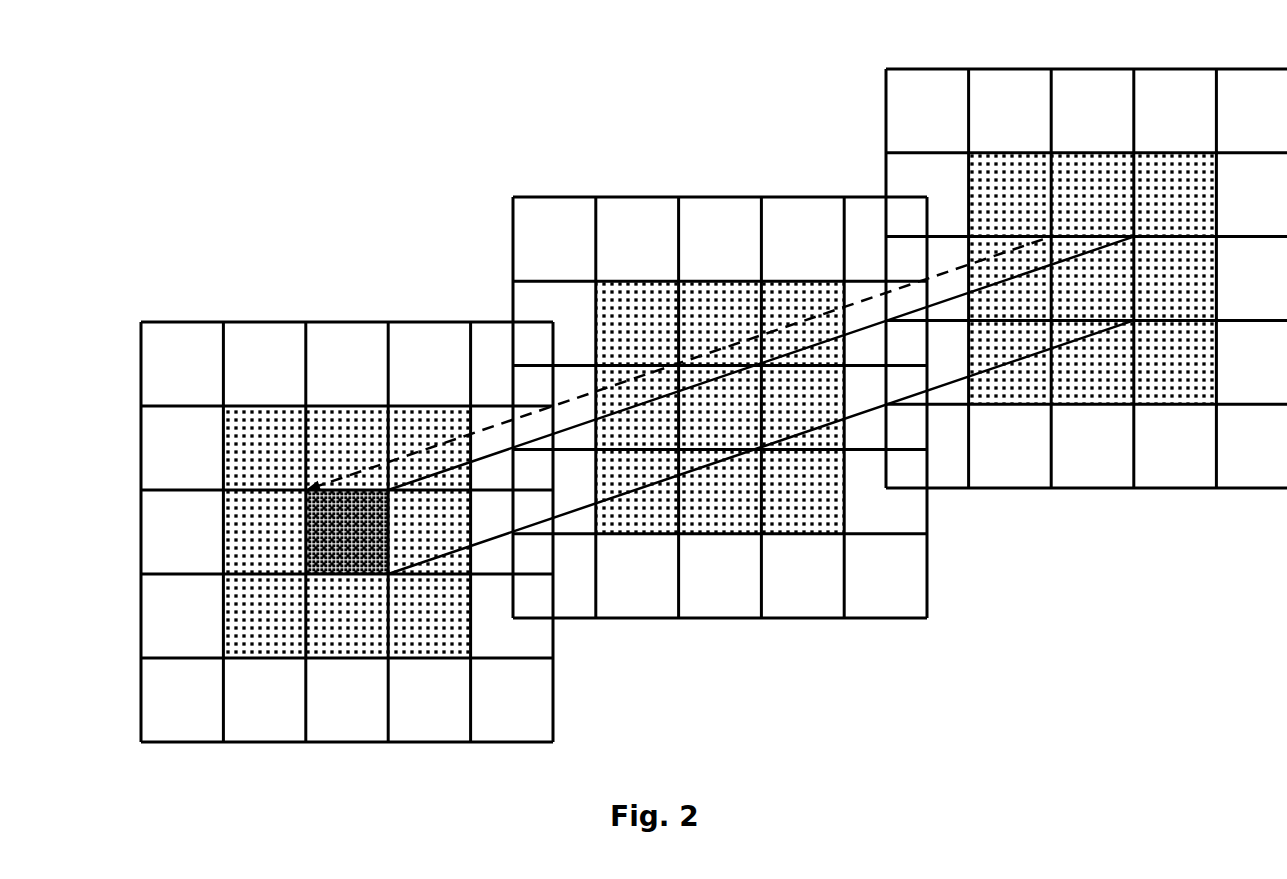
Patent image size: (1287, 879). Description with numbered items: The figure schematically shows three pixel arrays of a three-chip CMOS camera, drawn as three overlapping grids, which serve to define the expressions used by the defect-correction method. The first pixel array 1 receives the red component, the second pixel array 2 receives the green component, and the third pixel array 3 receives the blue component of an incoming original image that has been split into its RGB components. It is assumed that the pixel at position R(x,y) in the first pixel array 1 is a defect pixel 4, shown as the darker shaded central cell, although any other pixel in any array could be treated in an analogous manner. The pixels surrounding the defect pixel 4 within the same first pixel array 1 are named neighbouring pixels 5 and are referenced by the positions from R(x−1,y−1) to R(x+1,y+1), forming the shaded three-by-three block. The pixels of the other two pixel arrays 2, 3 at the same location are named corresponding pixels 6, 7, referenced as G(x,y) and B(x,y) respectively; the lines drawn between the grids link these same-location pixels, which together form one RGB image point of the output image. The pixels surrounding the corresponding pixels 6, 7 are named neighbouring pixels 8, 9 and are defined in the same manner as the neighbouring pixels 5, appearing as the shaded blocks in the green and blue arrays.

The first pixel array 1 is at (342, 742).
The second pixel array 2 is at (715, 618).
The third pixel array 3 is at (1088, 488).
The defect pixel 4 is at (305, 506).
The neighbouring pixels 5 is at (230, 648).
The corresponding pixel 6 is at (747, 367).
The corresponding pixel 7 is at (1115, 260).
The neighbouring pixels 8 is at (607, 292).
The neighbouring pixels 9 is at (990, 167).